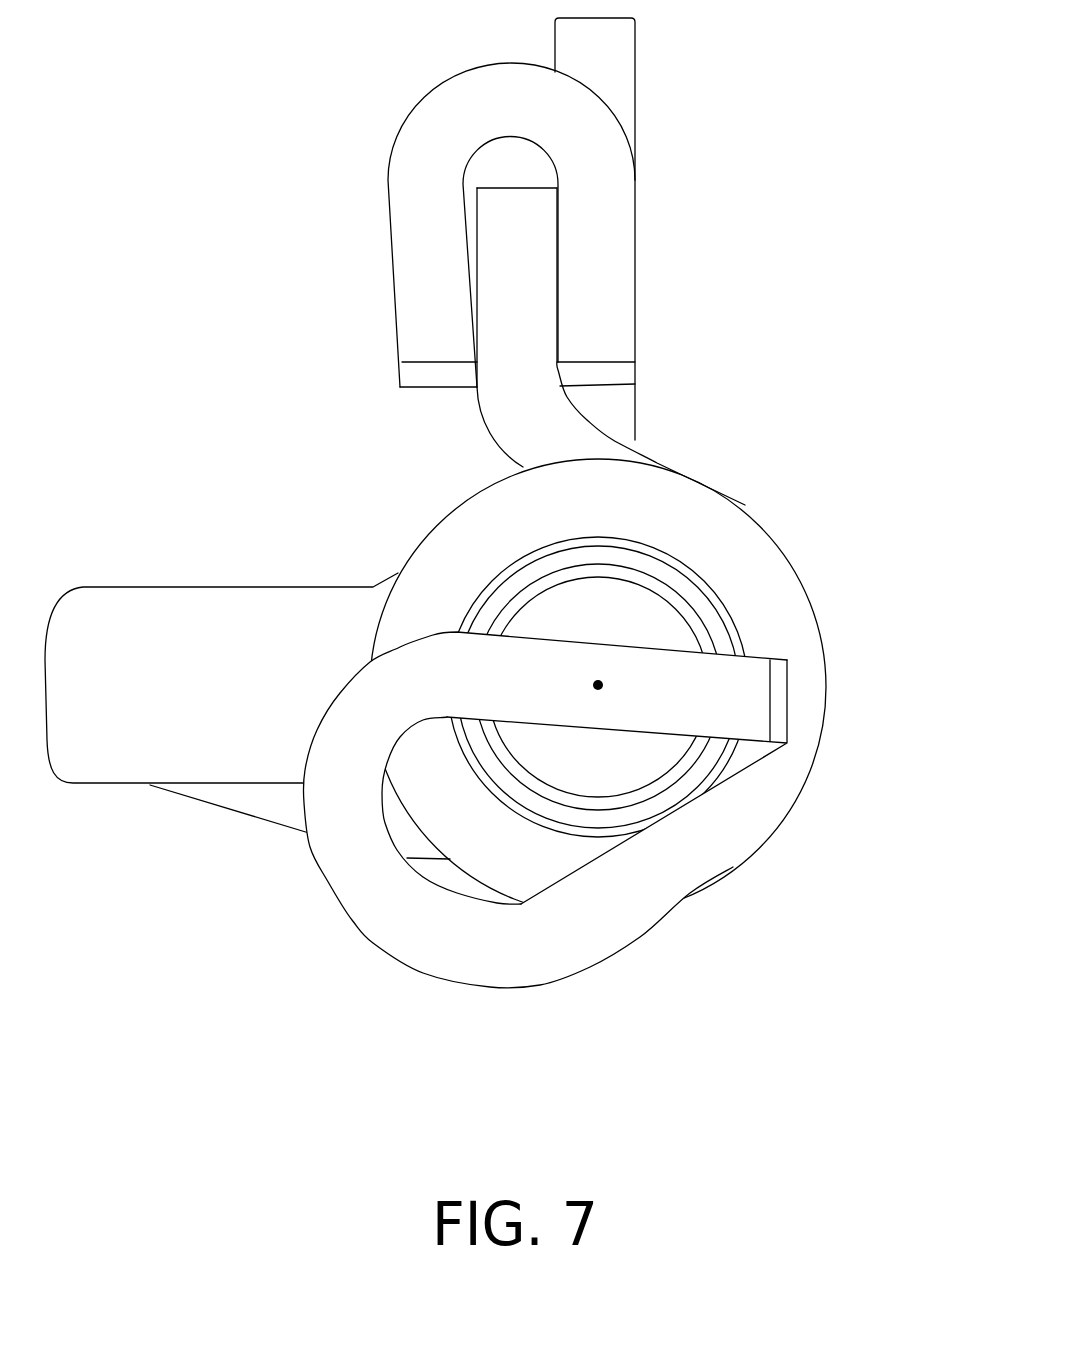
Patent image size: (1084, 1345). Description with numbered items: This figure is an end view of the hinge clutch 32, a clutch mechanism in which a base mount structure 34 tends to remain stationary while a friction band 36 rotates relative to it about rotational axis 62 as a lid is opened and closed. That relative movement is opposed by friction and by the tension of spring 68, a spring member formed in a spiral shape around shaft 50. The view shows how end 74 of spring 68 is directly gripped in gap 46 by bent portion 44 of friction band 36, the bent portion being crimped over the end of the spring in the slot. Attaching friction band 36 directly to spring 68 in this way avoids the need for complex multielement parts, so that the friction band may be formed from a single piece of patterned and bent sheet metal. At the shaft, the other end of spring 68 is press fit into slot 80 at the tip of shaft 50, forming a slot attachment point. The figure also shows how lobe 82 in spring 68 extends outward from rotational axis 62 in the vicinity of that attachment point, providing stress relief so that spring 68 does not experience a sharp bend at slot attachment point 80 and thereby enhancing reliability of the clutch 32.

The clutch 32 is at (862, 95).
The base mount structure 34 is at (105, 757).
The friction band 36 is at (612, 83).
The bent portion 44 is at (423, 315).
The slot 46 is at (509, 160).
The shaft 50 is at (653, 617).
The rotational axis 62 is at (598, 690).
The spring 68 is at (793, 617).
The end of spring 74 is at (533, 268).
The slot 80 is at (675, 742).
The lobe 82 is at (400, 923).